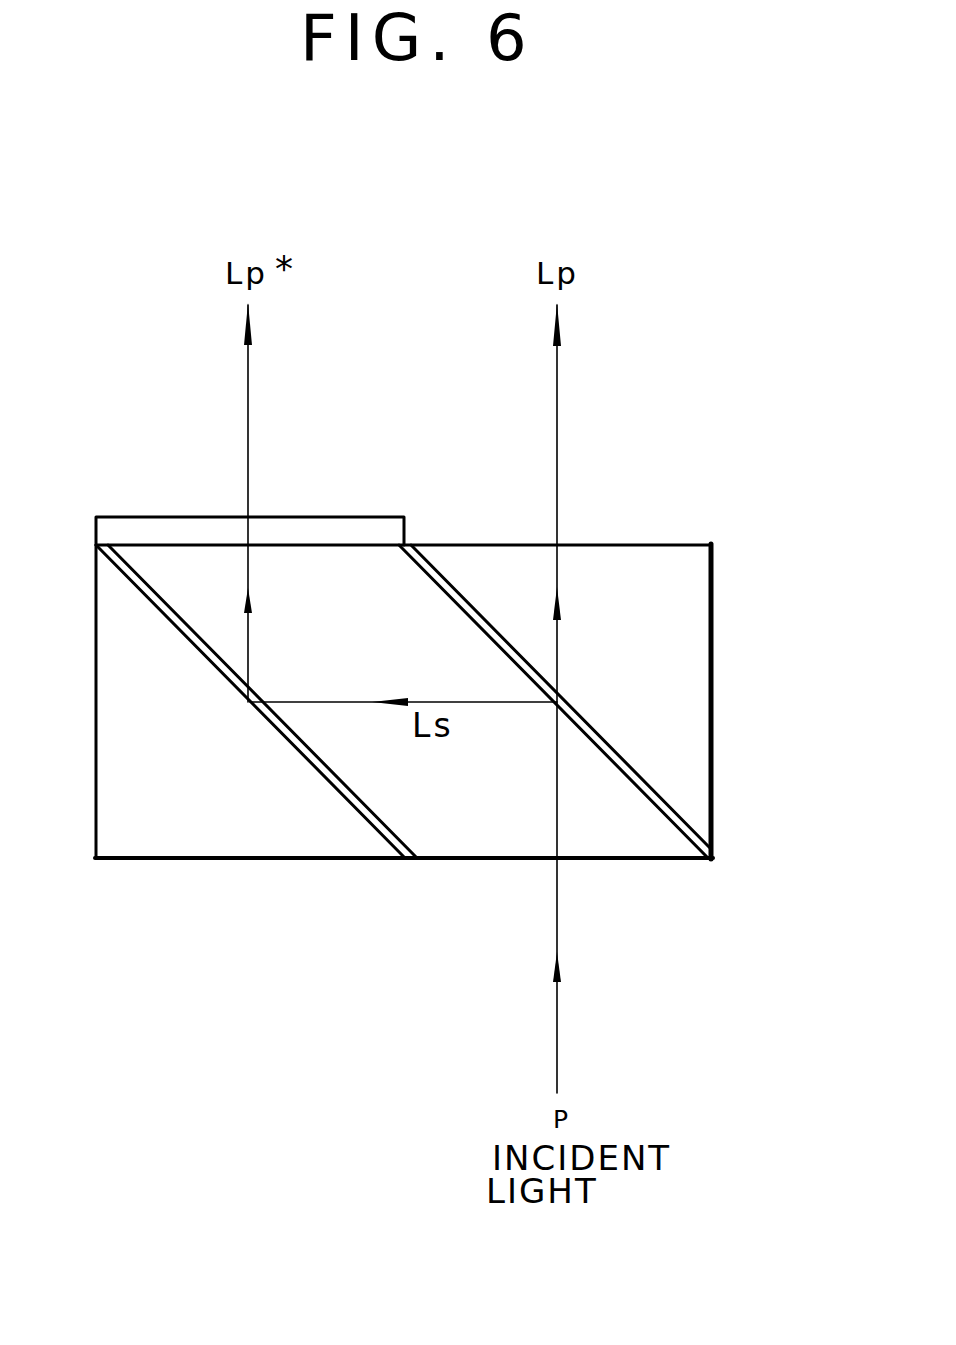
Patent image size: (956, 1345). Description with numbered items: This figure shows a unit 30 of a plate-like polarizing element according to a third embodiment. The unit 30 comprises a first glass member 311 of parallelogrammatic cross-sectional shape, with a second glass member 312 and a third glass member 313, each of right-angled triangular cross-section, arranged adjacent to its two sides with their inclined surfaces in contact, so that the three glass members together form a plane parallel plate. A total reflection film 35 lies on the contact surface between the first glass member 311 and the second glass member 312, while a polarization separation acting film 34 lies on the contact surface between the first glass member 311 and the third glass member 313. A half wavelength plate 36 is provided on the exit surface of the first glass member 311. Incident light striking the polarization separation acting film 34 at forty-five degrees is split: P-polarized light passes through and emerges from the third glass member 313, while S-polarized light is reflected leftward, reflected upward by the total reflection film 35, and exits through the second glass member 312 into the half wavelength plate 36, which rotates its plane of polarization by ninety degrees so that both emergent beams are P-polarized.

The unit of a plate-like polarizing element 30 is at (690, 508).
The half wavelength plate 36 is at (123, 531).
The total reflection film 35 is at (128, 586).
The polarization separation acting film 34 is at (655, 800).
The third glass member 313 is at (702, 632).
The second glass member 312 is at (149, 845).
The first glass member 311 is at (649, 845).